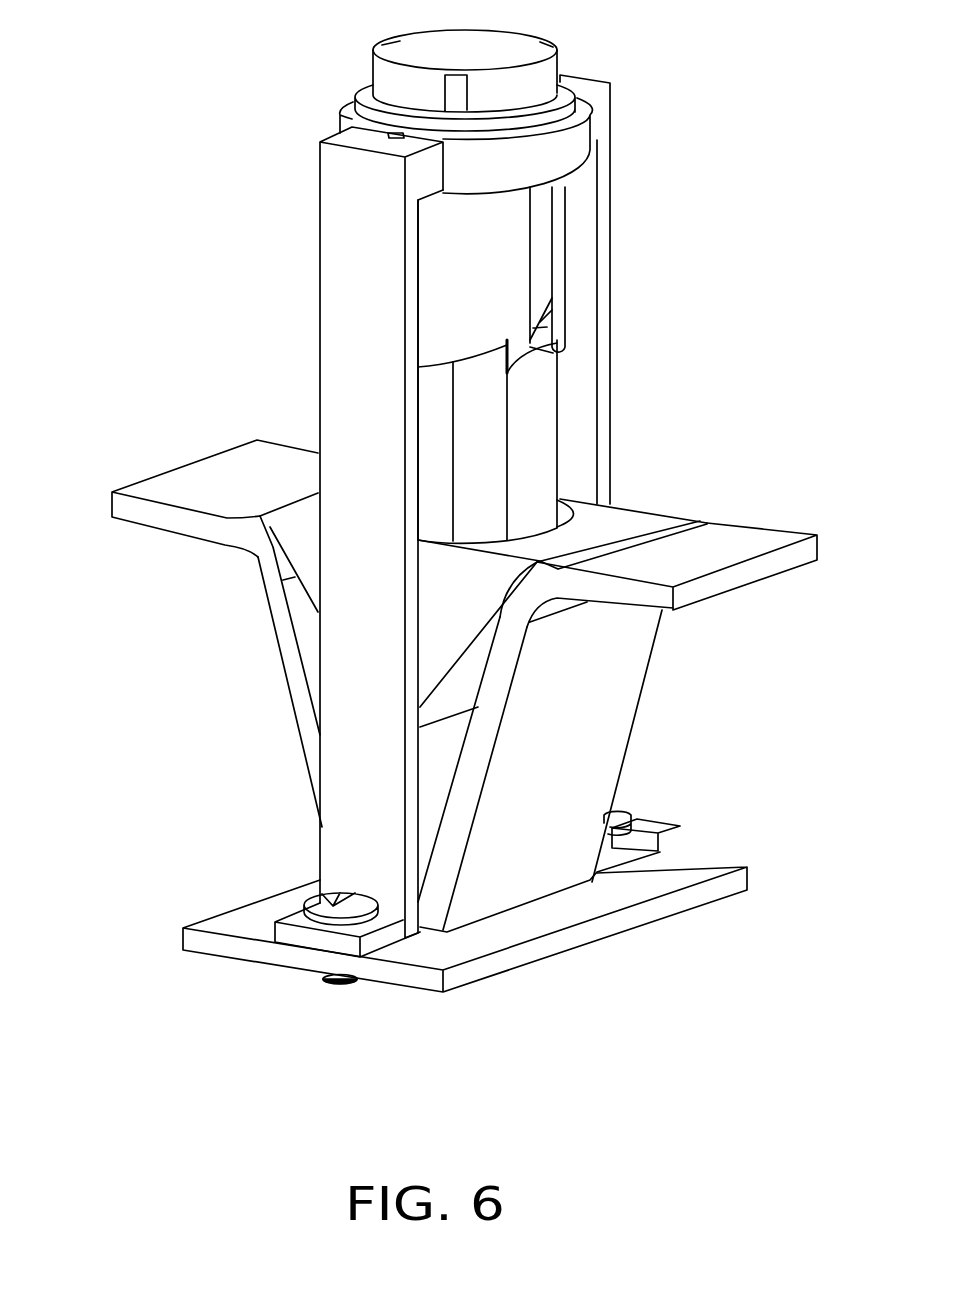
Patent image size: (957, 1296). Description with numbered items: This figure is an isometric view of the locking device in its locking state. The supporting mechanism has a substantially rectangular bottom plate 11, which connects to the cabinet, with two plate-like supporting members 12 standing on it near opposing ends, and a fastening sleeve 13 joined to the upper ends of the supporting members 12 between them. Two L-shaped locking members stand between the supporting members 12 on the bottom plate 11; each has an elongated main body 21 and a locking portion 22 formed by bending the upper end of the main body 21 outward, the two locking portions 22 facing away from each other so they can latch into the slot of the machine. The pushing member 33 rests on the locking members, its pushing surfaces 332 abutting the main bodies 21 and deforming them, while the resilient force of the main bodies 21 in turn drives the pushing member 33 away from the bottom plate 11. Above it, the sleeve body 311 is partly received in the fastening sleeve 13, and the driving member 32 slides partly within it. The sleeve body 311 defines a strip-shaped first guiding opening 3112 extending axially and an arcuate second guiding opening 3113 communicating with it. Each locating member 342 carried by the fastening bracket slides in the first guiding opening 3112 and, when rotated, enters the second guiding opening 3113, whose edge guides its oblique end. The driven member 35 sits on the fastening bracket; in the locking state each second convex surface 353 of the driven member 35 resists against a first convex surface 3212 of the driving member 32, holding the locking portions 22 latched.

The bottom plate 11 is at (678, 868).
The supporting member 12 is at (607, 108).
The fastening sleeve 13 is at (568, 160).
The main body 21 is at (288, 650).
The locking portion 22 is at (160, 485).
The driving member 32 is at (497, 40).
The pushing member 33 is at (652, 526).
The driven member 35 is at (540, 408).
The sleeve body 311 is at (440, 250).
The pushing surface 332 is at (267, 556).
The locating member 342 is at (490, 455).
The second convex surface 353 is at (553, 352).
The first guiding opening 3112 is at (564, 242).
The second guiding opening 3113 is at (494, 341).
The first convex surface 3212 is at (557, 316).